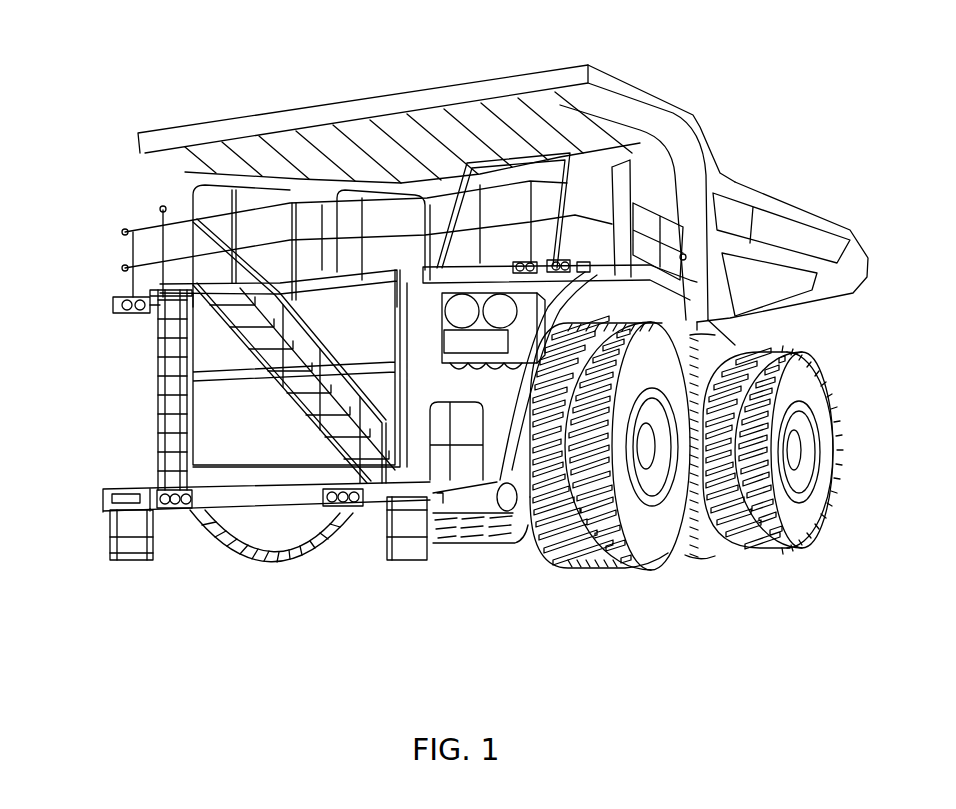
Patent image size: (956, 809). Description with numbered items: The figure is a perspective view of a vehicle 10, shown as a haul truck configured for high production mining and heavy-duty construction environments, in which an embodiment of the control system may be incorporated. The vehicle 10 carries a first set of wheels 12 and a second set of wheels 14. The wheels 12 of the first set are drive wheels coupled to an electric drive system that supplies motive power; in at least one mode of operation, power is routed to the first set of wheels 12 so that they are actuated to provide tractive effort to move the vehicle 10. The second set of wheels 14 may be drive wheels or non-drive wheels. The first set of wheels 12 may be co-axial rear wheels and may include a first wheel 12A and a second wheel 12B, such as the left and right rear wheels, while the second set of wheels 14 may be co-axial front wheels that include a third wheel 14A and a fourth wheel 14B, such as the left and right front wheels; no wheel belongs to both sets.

The vehicle 10 is at (225, 93).
The first set of wheels 12 is at (850, 383).
The first wheel 12A is at (750, 540).
The second wheel 12B is at (500, 525).
The second set of wheels 14 is at (70, 535).
The third wheel 14A is at (637, 535).
The fourth wheel 14B is at (260, 537).